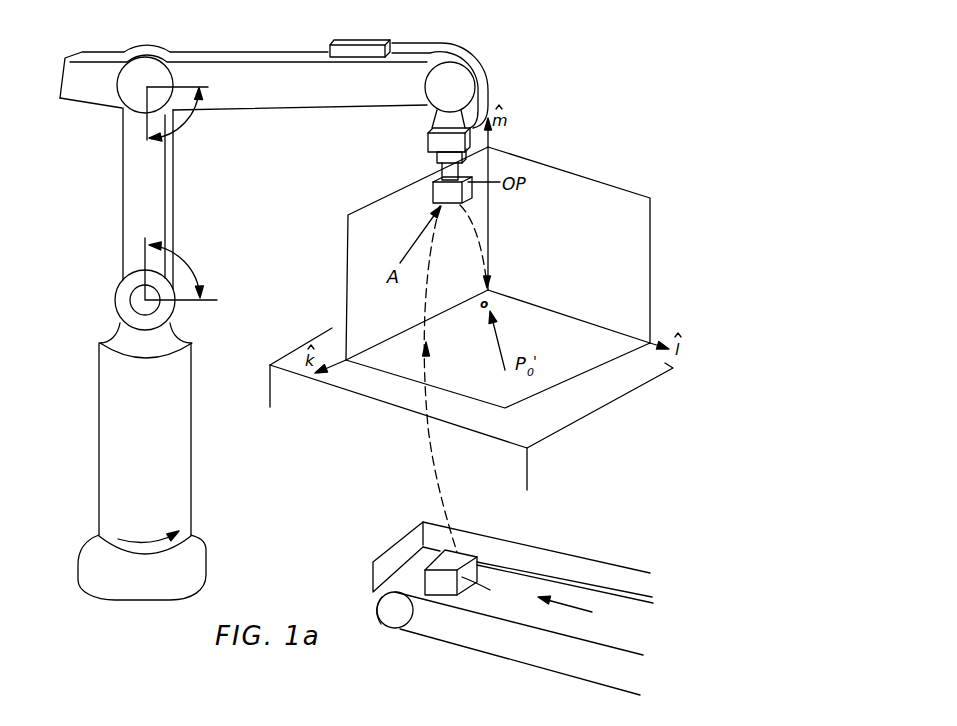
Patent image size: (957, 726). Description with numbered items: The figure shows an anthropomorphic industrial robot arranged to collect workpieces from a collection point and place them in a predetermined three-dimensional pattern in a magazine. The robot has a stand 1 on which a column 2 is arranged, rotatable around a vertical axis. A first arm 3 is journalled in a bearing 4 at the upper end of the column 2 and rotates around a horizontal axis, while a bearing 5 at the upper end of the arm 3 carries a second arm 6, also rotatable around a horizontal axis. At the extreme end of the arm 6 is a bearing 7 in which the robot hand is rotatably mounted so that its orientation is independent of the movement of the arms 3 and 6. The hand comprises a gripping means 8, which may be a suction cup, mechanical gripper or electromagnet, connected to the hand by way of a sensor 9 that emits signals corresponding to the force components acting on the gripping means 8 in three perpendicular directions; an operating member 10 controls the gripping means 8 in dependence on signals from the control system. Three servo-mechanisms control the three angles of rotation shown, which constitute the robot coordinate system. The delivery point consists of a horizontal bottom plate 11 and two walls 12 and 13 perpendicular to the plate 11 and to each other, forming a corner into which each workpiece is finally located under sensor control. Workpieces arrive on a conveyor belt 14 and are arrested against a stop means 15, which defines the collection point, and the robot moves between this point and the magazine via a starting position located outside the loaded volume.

The stand 1 is at (88, 561).
The column 2 is at (123, 438).
The first arm 3 is at (132, 207).
The bearing 4 is at (145, 307).
The bearing 5 is at (147, 75).
The second arm 6 is at (262, 75).
The bearing 7 is at (460, 90).
The gripping means 8 is at (433, 170).
The sensor 9 is at (430, 142).
The operating member 10 is at (357, 44).
The bottom plate 11 is at (573, 362).
The wall 12 is at (355, 247).
The wall 13 is at (626, 200).
The conveyor belt 14 is at (557, 622).
The stop means 15 is at (390, 562).